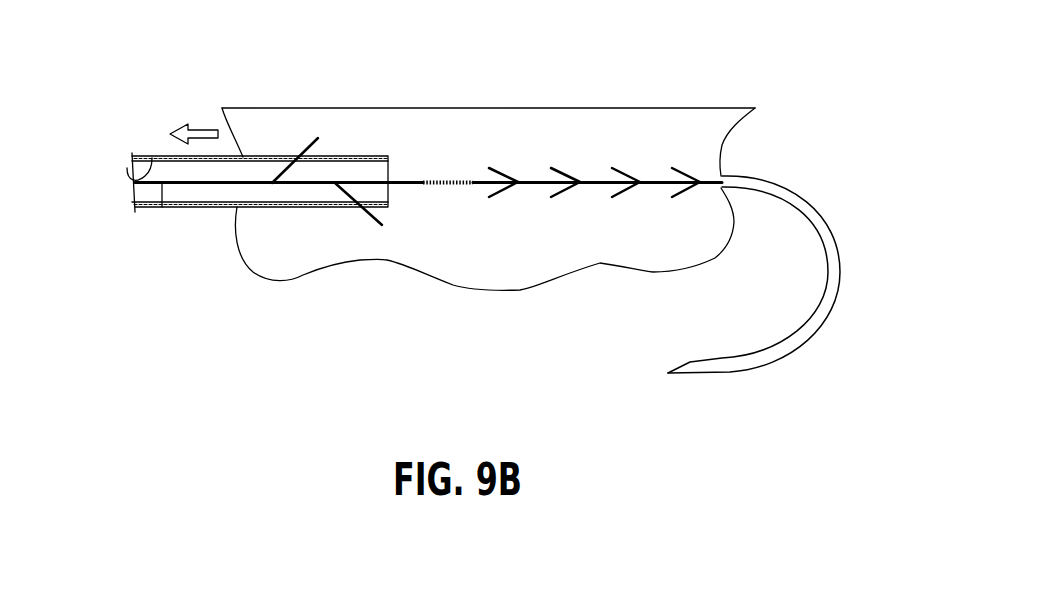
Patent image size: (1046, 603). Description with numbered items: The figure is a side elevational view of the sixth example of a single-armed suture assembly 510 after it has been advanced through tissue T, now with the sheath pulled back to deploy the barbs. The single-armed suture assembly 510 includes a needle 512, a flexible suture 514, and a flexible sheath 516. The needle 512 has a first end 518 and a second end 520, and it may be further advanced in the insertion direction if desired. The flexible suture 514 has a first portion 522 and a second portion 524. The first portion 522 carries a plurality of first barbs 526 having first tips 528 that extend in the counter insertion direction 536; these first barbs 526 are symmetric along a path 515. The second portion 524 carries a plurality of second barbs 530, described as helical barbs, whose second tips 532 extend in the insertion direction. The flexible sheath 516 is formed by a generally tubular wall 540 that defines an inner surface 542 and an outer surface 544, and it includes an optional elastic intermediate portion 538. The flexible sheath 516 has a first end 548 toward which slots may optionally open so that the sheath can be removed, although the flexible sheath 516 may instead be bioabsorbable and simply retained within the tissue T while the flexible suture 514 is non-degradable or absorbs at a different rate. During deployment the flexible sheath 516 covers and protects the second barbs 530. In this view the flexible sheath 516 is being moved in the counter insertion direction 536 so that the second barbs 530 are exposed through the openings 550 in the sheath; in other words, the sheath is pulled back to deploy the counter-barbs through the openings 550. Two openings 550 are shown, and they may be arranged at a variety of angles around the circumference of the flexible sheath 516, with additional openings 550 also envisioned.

The single-armed suture assembly 510 is at (460, 202).
The needle 512 is at (832, 226).
The flexible suture 514 is at (462, 128).
The path 515 is at (162, 207).
The flexible sheath 516 is at (147, 147).
The first end 518 is at (670, 373).
The second end 520 is at (721, 189).
The first portion 522 is at (625, 147).
The second portion 524 is at (343, 135).
The first barbs 526 is at (636, 193).
The first tips 528 is at (563, 196).
The second barbs 530 is at (367, 220).
The second tips 532 is at (318, 138).
The counter insertion direction 536 is at (202, 128).
The elastic intermediate portion 538 is at (463, 178).
The tubular wall 540 is at (183, 210).
The inner surface 542 is at (127, 168).
The outer surface 544 is at (219, 208).
The first end 548 is at (388, 197).
The openings 550 is at (272, 157).
The tissue T is at (695, 125).